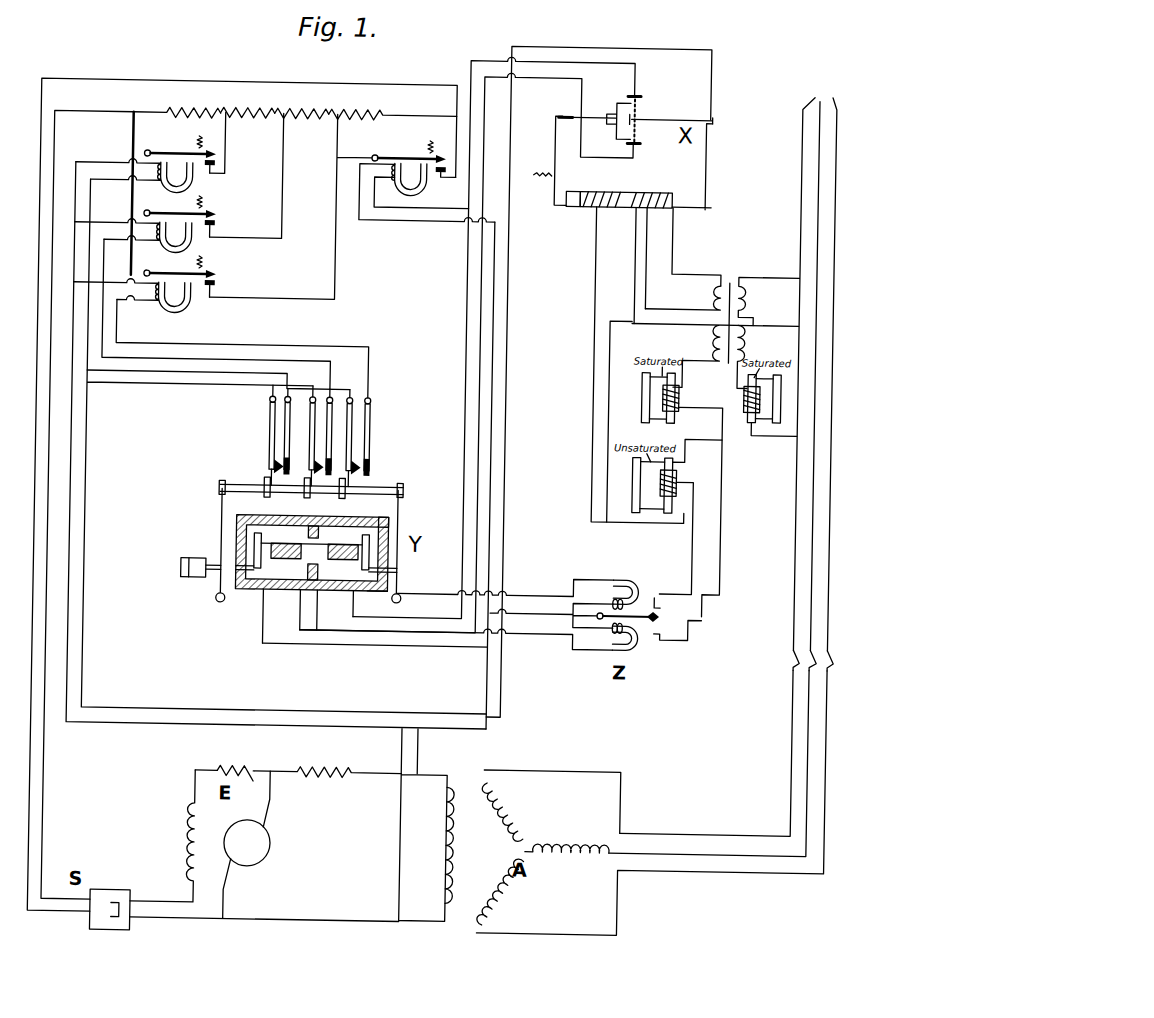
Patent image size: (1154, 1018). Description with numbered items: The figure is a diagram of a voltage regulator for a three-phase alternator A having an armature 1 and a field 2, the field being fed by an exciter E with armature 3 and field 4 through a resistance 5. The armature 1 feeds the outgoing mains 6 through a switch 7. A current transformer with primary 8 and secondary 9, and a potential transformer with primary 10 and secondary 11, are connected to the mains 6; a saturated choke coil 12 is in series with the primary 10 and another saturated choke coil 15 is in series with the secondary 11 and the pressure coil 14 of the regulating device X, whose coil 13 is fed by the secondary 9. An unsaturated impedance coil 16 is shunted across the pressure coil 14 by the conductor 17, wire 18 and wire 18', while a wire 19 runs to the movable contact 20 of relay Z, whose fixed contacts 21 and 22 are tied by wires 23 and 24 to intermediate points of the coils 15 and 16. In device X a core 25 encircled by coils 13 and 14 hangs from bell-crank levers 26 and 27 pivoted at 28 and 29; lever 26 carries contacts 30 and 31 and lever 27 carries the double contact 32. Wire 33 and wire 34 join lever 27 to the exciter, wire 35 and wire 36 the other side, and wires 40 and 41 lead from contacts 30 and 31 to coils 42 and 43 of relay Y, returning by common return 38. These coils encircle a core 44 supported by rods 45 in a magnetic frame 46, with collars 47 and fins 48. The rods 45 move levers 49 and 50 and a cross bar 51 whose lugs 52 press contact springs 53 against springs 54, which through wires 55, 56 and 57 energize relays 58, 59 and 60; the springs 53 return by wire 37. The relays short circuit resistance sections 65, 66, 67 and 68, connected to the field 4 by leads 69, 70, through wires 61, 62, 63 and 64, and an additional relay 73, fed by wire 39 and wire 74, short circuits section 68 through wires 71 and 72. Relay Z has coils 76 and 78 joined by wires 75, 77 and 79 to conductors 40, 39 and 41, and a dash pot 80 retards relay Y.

The armature 1 is at (536, 826).
The field 2 is at (461, 842).
The armature 3 is at (277, 839).
The field 4 is at (192, 843).
The resistance 5 is at (326, 769).
The outgoing mains 6 is at (724, 848).
The switch 7 is at (792, 655).
The primary 8 is at (745, 291).
The secondary 9 is at (708, 292).
The primary 10 is at (745, 345).
The secondary 11 is at (709, 345).
The saturated choke coil 12 is at (744, 396).
The coil 13 is at (652, 190).
The pressure coil 14 is at (604, 190).
The saturated choke coil 15 is at (678, 393).
The unsaturated impedance coil 16 is at (660, 485).
The conductor 17 is at (686, 428).
The wire 18 is at (622, 378).
The wire 18' is at (596, 364).
The wire 19 is at (630, 250).
The movable contact 20 is at (664, 612).
The contact 21 is at (658, 593).
The contact 22 is at (662, 640).
The wire 23 is at (723, 505).
The wire 24 is at (693, 540).
The core 25 is at (567, 207).
The bell-crank lever 26 is at (548, 148).
The bell-crank lever 27 is at (702, 164).
The pivot 28 is at (550, 114).
The pivot 29 is at (708, 116).
The contact 30 is at (636, 94).
The contact 31 is at (633, 141).
The double contact 32 is at (632, 114).
The wire 33 is at (626, 49).
The wire 34 is at (424, 753).
The wire 35 is at (405, 836).
The wire 36 is at (72, 168).
The common return wire 37 is at (216, 392).
The common return 38 is at (380, 648).
The wire 39 is at (416, 221).
The wire 40 is at (468, 60).
The wire 41 is at (582, 91).
The coil 42 is at (363, 550).
The coil 43 is at (299, 550).
The core 44 is at (307, 603).
The rods 45 is at (311, 543).
The frame 46 is at (373, 510).
The annular shoulders 47 is at (380, 599).
The fins 48 is at (314, 508).
The lever 49 is at (220, 524).
The lever 50 is at (400, 515).
The cross bar 51 is at (372, 488).
The lugs 52 is at (268, 478).
The contact springs 53 is at (308, 430).
The contact springs 54 is at (368, 432).
The wire 55 is at (368, 366).
The wire 56 is at (311, 360).
The wire 57 is at (234, 372).
The relay 58 is at (158, 303).
The relay 59 is at (158, 243).
The relay 60 is at (158, 183).
The wire 61 is at (135, 148).
The wire 62 is at (221, 150).
The wire 63 is at (278, 178).
The wire 64 is at (332, 240).
The resistance section 65 is at (178, 101).
The resistance section 66 is at (248, 100).
The resistance section 67 is at (302, 101).
The resistance section 68 is at (393, 102).
The lead 69 is at (136, 85).
The lead 70 is at (82, 117).
The wire 71 is at (346, 156).
The wire 72 is at (450, 128).
The relay 73 is at (396, 179).
The wire 74 is at (436, 176).
The wire 75 is at (530, 594).
The coil 76 is at (616, 588).
The wire 77 is at (556, 612).
The coil 78 is at (614, 640).
The wire 79 is at (568, 648).
The dash pot 80 is at (190, 582).